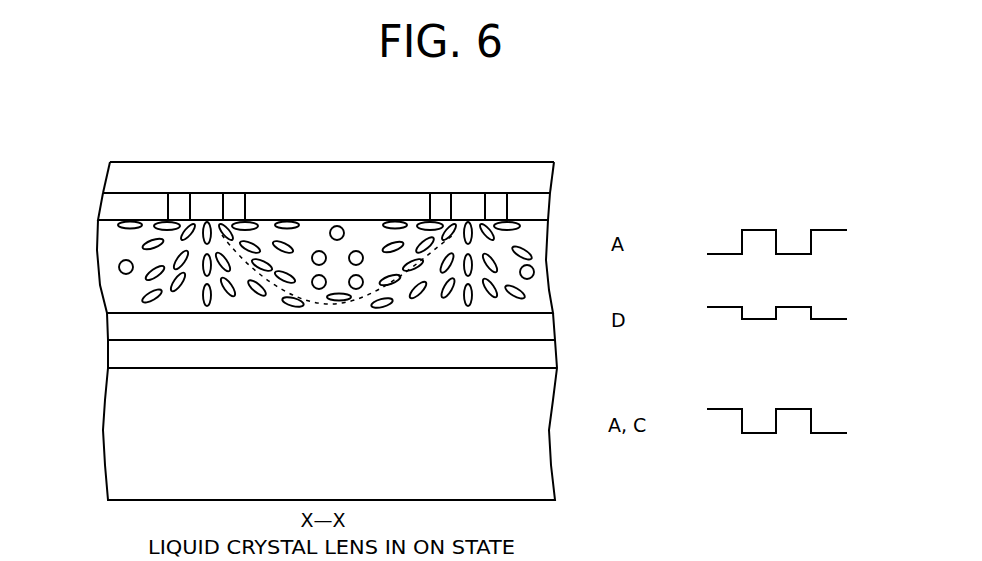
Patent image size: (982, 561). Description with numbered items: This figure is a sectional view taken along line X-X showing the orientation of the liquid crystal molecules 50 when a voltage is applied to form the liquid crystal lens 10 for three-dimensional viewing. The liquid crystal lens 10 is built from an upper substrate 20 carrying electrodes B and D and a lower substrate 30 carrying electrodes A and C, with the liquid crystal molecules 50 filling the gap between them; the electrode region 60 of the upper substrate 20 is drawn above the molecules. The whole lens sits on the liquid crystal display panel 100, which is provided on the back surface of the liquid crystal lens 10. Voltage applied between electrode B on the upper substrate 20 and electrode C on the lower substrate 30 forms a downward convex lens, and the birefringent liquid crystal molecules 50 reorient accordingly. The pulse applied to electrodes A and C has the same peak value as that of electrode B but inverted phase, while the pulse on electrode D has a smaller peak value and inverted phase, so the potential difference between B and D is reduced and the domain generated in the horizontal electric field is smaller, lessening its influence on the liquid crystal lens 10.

The liquid crystal lens 10 is at (78, 163).
The upper substrate 20 is at (150, 173).
The lower substrate 30 is at (118, 358).
The liquid crystal molecules 50 is at (402, 224).
The electrodes 60 is at (264, 220).
The liquid crystal display panel 100 is at (115, 455).